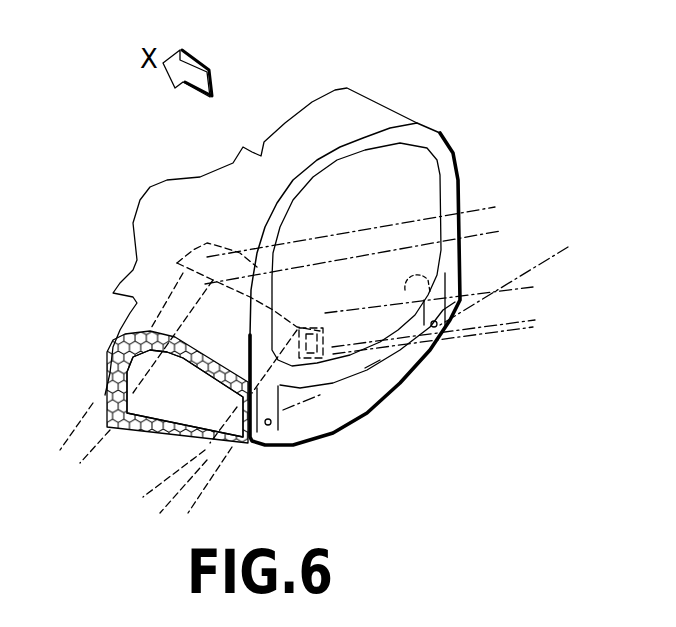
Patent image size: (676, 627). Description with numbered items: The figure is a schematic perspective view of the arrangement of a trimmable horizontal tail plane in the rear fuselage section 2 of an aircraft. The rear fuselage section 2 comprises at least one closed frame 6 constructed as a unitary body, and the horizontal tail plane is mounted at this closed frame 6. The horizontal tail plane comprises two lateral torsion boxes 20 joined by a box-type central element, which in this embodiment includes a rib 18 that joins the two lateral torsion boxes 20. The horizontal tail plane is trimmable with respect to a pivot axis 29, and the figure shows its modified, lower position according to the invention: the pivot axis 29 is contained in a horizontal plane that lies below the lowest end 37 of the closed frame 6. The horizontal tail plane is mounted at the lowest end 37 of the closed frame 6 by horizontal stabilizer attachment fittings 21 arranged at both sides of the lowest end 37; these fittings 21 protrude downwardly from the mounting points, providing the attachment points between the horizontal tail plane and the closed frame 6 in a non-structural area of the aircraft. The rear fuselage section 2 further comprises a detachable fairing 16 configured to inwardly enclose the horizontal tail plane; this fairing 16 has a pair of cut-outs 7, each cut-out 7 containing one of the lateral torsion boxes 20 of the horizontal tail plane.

The rear fuselage section 2 is at (313, 123).
The closed frame 6 is at (443, 150).
The cut-out 7 is at (185, 393).
The detachable fairing 16 is at (110, 373).
The rib 18 is at (237, 256).
The lateral torsion box 20 is at (328, 341).
The horizontal stabilizer attachment fitting 21 is at (443, 335).
The pivot axis 29 is at (552, 258).
The lowest end 37 is at (365, 368).